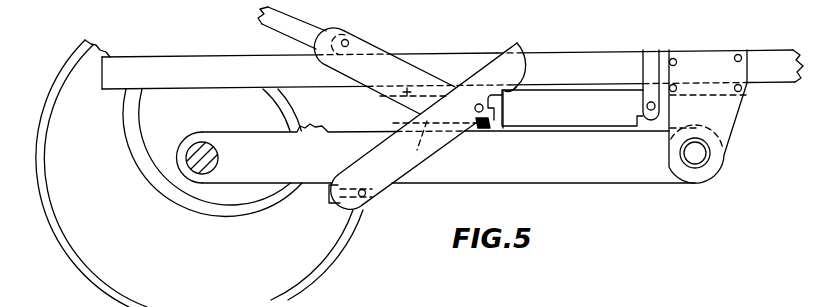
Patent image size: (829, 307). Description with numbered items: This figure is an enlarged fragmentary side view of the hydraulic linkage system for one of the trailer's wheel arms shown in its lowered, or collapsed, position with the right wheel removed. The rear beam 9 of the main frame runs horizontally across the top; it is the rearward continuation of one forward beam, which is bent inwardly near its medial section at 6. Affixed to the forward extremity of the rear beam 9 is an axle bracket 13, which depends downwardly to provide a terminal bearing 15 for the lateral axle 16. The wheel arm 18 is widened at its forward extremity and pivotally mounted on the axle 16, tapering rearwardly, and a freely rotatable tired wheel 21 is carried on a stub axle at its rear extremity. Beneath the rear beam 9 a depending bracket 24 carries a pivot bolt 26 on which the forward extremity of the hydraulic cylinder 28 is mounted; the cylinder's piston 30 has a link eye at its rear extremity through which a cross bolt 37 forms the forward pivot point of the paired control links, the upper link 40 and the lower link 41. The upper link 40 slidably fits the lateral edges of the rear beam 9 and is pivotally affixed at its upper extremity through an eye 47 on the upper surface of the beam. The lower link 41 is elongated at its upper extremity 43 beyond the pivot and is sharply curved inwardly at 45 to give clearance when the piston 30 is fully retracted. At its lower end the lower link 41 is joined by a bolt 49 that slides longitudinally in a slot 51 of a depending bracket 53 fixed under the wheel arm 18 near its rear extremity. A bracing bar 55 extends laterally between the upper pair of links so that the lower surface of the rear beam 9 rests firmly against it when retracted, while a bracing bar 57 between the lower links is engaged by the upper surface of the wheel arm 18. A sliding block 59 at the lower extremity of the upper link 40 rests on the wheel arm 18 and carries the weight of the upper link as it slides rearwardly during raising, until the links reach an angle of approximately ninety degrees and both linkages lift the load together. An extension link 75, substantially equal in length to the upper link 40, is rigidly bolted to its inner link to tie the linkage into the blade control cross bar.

The bend point of beam 6 is at (707, 48).
The rear beam section 9 is at (239, 60).
The axle bracket 13 is at (725, 67).
The terminal bearing 15 is at (711, 159).
The lateral axle 16 is at (698, 165).
The wheel arm 18 is at (519, 177).
The tired wheel 21 is at (102, 273).
The depending bracket 24 is at (649, 62).
The pivot bolt 26 is at (651, 112).
The hydraulic cylinder 28 is at (583, 117).
The piston 30 is at (500, 107).
The cross bolt 37 is at (474, 108).
The upper link 40 is at (392, 58).
The lower link 41 is at (362, 162).
The upper extremity of lower link 43 is at (502, 56).
The inwardly curved portion 45 is at (519, 88).
The eye 47 is at (350, 42).
The bolt 49 is at (369, 198).
The slot 51 is at (340, 208).
The depending bracket 53 is at (327, 192).
The bracing bar 55 is at (397, 105).
The bracing bar 57 is at (420, 138).
The sliding block 59 is at (481, 130).
The extension link 75 is at (304, 29).